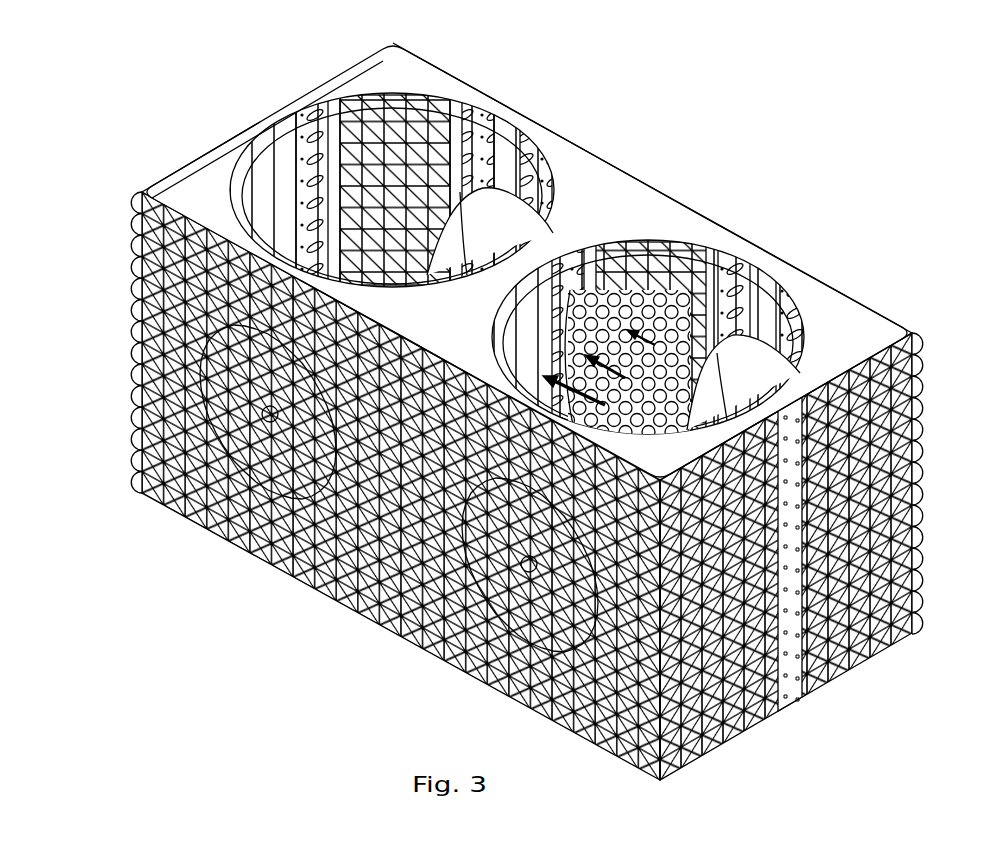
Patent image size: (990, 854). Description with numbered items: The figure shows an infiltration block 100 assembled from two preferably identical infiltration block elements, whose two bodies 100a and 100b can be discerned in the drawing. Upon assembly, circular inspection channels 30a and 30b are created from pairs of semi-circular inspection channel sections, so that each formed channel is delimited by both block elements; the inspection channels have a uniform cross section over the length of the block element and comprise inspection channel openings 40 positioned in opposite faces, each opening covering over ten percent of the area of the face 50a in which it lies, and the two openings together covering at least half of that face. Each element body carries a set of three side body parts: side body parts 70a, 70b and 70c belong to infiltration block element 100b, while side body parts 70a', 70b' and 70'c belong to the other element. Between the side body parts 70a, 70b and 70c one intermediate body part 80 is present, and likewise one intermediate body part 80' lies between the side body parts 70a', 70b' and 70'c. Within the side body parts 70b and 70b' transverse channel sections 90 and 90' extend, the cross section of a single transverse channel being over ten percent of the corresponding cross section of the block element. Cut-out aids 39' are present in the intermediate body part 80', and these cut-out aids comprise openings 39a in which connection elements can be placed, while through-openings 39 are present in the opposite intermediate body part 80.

The infiltration block 100 is at (788, 162).
The infiltration block element 100a is at (737, 717).
The infiltration block element 100b is at (867, 658).
The side body part 70a is at (430, 77).
The side body part 70a' is at (201, 151).
The side body part 70b is at (617, 195).
The side body part 70b' is at (448, 329).
The side body part 70c is at (817, 375).
The side body part 70'c is at (874, 554).
The intermediate body part 80 is at (380, 129).
The intermediate body part 80' is at (381, 318).
The top plate 50a is at (744, 268).
The inspection channel 30a is at (315, 202).
The inspection channel 30b is at (715, 322).
The through-opening 39 is at (657, 245).
The cut-out aid 39' is at (336, 508).
The opening 39a is at (160, 445).
The inspection channel opening 40 is at (455, 145).
The transverse channel section 90 is at (648, 281).
The transverse channel section 90' is at (638, 280).